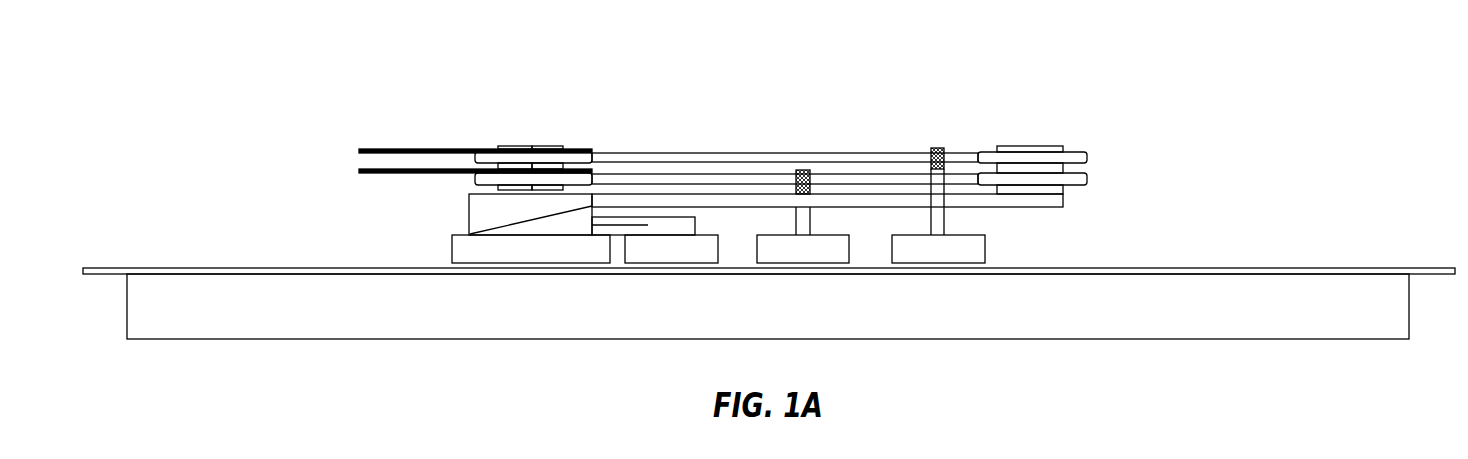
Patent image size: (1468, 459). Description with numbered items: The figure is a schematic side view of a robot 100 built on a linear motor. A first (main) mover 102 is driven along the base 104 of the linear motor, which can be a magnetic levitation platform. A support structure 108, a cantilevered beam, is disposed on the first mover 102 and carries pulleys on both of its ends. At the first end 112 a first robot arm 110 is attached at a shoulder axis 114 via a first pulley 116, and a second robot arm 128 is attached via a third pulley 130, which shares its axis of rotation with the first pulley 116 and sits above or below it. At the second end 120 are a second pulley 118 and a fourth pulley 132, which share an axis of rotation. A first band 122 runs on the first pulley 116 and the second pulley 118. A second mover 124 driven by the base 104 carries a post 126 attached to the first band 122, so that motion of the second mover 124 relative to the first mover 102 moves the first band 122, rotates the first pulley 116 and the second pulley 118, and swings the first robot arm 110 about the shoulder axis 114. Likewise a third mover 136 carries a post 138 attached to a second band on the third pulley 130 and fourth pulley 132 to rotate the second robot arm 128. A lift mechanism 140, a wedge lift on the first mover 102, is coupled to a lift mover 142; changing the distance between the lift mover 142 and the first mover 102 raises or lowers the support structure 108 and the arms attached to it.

The robot 100 is at (1158, 67).
The first mover 102 is at (452, 247).
The base 104 is at (1183, 340).
The support structure 108 is at (467, 208).
The first robot arm 110 is at (360, 175).
The first end 112 is at (468, 214).
The shoulder axis 114 is at (513, 146).
The first pulley 116 is at (580, 172).
The second pulley 118 is at (1085, 162).
The second end 120 is at (1033, 207).
The first band 122 is at (848, 174).
The second mover 124 is at (850, 250).
The post 126 is at (810, 212).
The second robot arm 128 is at (360, 148).
The third pulley 130 is at (573, 147).
The fourth pulley 132 is at (1073, 148).
The third mover 136 is at (985, 250).
The post 138 is at (944, 212).
The lift mechanism 140 is at (593, 230).
The lift mover 142 is at (718, 250).